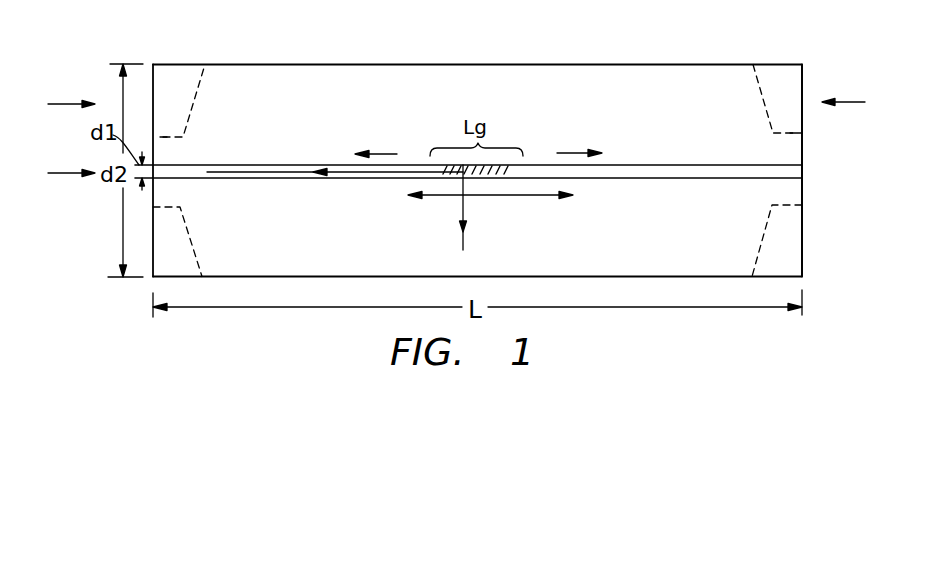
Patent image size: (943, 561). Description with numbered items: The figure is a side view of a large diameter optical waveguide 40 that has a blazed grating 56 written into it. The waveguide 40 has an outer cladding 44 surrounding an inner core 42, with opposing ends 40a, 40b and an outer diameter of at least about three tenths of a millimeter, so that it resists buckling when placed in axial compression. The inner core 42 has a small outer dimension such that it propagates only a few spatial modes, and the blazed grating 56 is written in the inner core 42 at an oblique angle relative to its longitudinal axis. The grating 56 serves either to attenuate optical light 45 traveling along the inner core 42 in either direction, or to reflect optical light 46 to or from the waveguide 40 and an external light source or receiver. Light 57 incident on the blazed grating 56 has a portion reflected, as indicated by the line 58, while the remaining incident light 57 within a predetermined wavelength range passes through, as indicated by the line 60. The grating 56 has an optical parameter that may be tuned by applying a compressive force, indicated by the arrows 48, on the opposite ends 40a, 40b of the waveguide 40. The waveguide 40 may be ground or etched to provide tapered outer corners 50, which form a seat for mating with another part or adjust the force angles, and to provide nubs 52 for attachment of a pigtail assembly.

The large diameter optical waveguide 40 is at (526, 60).
The first end of the optical waveguide 40a is at (153, 246).
The second end of the optical waveguide 40b is at (802, 193).
The inner core 42 is at (337, 164).
The outer cladding 44 is at (620, 115).
The optical light traveling in the waveguide 45 is at (502, 195).
The reflected optical light 46 is at (273, 179).
The compressive force arrows 48 is at (67, 104).
The tapered outer corners 50 is at (197, 86).
The nubs 52 is at (163, 137).
The blazed grating 56 is at (448, 179).
The incident light 57 is at (65, 173).
The reflected light line 58 is at (388, 153).
The transmitted light line 60 is at (570, 153).